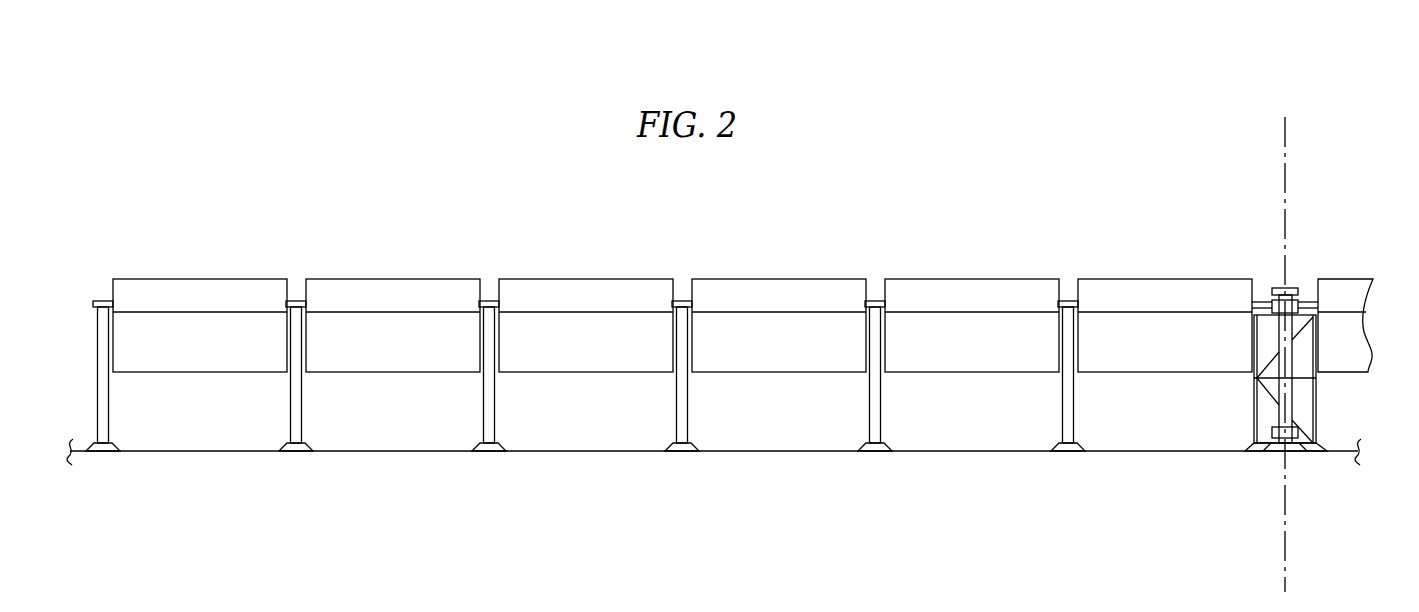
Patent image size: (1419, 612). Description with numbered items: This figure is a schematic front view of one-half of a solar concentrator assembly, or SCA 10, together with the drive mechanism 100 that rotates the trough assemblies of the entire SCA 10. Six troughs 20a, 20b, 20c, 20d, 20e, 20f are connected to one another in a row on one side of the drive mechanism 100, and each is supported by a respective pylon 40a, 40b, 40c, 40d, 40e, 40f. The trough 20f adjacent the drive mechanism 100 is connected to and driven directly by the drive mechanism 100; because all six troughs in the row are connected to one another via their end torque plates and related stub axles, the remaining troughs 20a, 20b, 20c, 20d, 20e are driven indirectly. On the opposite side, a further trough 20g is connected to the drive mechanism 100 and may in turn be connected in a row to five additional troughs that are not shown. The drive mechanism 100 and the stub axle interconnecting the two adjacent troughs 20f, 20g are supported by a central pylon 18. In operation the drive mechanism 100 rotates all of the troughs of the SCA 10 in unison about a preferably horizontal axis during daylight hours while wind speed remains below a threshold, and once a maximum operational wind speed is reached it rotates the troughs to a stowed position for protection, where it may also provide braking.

The solar concentrator assembly (SCA) 10 is at (1305, 301).
The central pylon 18 is at (1257, 408).
The trough 20a is at (199, 301).
The trough 20b is at (392, 301).
The trough 20c is at (585, 301).
The trough 20d is at (778, 301).
The trough 20e is at (971, 301).
The trough 20f is at (1164, 301).
The trough 20g is at (1335, 281).
The pylon 40a is at (139, 402).
The pylon 40b is at (332, 402).
The pylon 40c is at (524, 402).
The pylon 40d is at (718, 402).
The pylon 40e is at (911, 402).
The pylon 40f is at (1101, 402).
The drive mechanism 100 is at (1251, 336).